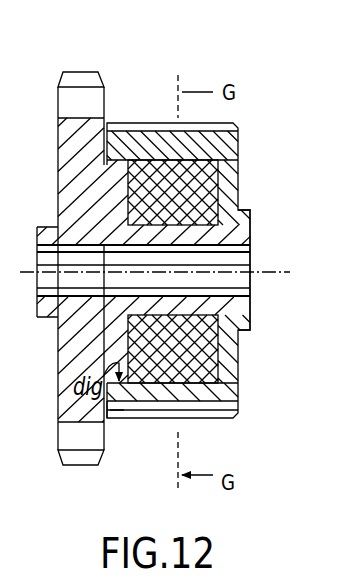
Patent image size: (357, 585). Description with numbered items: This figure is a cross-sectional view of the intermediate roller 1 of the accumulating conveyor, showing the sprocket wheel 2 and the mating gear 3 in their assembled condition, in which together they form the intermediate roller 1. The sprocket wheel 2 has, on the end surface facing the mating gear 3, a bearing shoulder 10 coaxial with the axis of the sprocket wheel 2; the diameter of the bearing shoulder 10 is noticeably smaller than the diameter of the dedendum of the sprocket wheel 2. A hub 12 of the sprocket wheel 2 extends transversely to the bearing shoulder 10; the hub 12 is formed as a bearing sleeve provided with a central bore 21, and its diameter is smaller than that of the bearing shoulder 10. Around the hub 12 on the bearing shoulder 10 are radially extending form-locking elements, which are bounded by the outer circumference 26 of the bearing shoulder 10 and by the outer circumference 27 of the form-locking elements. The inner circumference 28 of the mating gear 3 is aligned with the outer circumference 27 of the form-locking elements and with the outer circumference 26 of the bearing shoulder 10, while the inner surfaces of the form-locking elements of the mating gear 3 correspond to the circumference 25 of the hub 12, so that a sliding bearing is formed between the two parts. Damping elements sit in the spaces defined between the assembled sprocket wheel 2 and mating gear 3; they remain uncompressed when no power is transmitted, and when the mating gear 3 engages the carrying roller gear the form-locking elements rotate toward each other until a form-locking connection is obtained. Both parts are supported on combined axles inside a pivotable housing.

The intermediate roller 1 is at (259, 96).
The sprocket wheel 2 is at (86, 80).
The mating gear 3 is at (122, 137).
The bearing shoulder 10 is at (131, 402).
The hub 12 is at (251, 233).
The bore 21 is at (245, 282).
The circumference of the hub 25 is at (50, 228).
The outer circumference of the bearing shoulder 26 is at (126, 399).
The outer circumference of the form-locking elements 27 is at (212, 388).
The inner circumference of the mating gear 28 is at (218, 360).